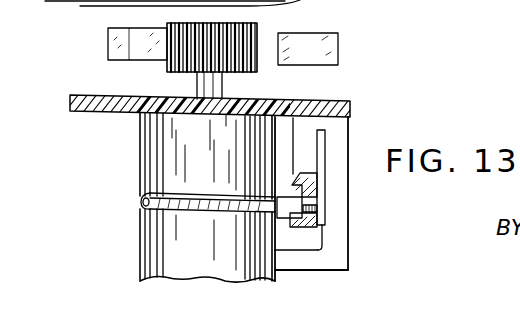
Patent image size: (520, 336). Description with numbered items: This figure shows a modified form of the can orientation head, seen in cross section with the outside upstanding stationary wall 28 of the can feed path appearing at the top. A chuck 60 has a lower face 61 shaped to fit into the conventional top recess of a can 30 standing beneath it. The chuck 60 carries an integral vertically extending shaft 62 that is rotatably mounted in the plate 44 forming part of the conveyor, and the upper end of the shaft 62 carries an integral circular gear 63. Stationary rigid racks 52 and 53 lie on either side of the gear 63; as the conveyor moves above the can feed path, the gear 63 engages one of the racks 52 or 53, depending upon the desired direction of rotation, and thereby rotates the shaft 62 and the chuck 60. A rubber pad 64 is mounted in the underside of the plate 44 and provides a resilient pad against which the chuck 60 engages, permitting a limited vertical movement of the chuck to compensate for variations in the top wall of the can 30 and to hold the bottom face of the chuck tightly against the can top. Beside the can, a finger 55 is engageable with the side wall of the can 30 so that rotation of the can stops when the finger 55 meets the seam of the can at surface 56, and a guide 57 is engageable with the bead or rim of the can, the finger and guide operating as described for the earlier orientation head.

The outside upstanding stationary wall 28 is at (49, 0).
The can 30 is at (160, 240).
The plate 44 is at (351, 104).
The stationary rigid rack 52 is at (110, 30).
The stationary rigid rack 53 is at (339, 58).
The finger 55 is at (339, 244).
The surface 56 is at (271, 261).
The guide 57 is at (300, 200).
The chuck 60 is at (162, 150).
The lower face 61 is at (160, 193).
The shaft 62 is at (223, 85).
The circular gear 63 is at (215, 23).
The rubber pad 64 is at (146, 113).